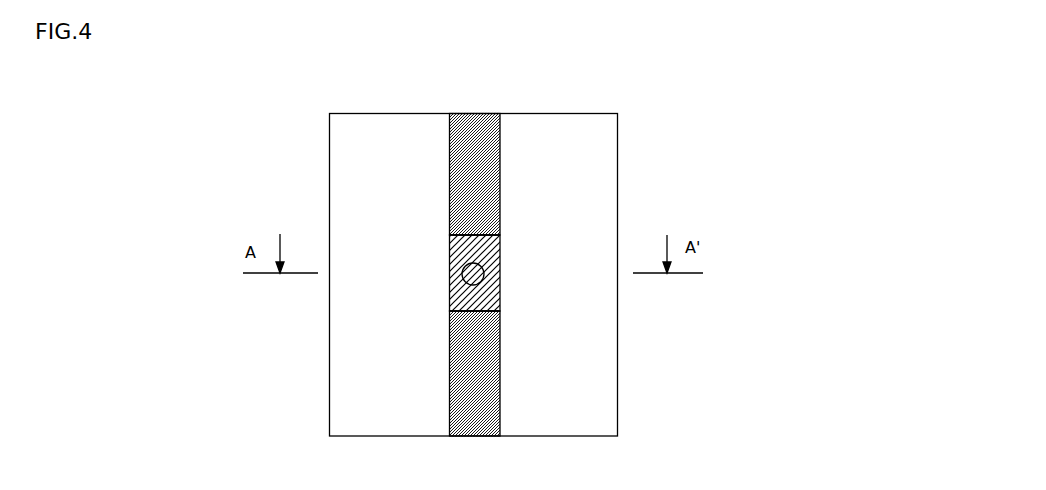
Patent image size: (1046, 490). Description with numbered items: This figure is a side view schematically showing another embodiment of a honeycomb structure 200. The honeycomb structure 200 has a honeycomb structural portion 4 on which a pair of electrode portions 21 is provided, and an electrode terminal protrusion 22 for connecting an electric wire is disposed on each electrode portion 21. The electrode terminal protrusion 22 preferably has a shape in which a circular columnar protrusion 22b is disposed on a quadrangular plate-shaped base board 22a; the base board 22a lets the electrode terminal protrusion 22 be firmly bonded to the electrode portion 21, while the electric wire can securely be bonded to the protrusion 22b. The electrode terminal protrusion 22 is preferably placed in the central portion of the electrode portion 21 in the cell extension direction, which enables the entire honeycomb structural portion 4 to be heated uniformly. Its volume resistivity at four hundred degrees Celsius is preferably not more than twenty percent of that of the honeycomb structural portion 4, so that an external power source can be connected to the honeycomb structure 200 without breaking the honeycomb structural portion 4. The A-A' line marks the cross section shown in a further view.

The honeycomb structure 200 is at (866, 111).
The honeycomb structural portion 4 is at (617, 413).
The electrode portion 21 is at (500, 178).
The electrode terminal protrusion 22 is at (502, 257).
The base board 22a is at (449, 290).
The protrusion 22b is at (449, 245).